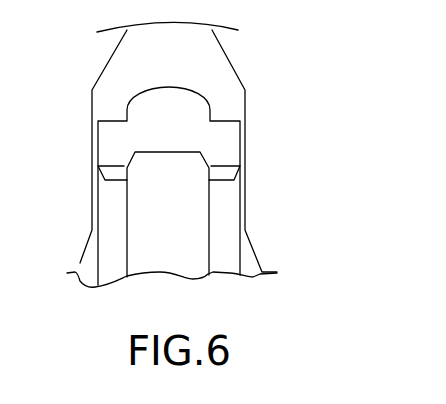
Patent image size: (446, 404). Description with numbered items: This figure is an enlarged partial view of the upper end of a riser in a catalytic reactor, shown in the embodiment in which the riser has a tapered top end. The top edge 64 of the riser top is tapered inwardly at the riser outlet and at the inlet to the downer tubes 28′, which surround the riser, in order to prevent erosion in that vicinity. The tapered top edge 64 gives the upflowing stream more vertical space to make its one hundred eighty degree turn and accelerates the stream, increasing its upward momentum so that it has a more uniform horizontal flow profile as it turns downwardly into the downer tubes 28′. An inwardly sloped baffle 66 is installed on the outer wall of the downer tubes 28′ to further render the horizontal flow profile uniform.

The downer tubes 28′ is at (223, 208).
The inwardly sloped baffle 66 is at (227, 170).
The tapered top edge 64 is at (127, 158).